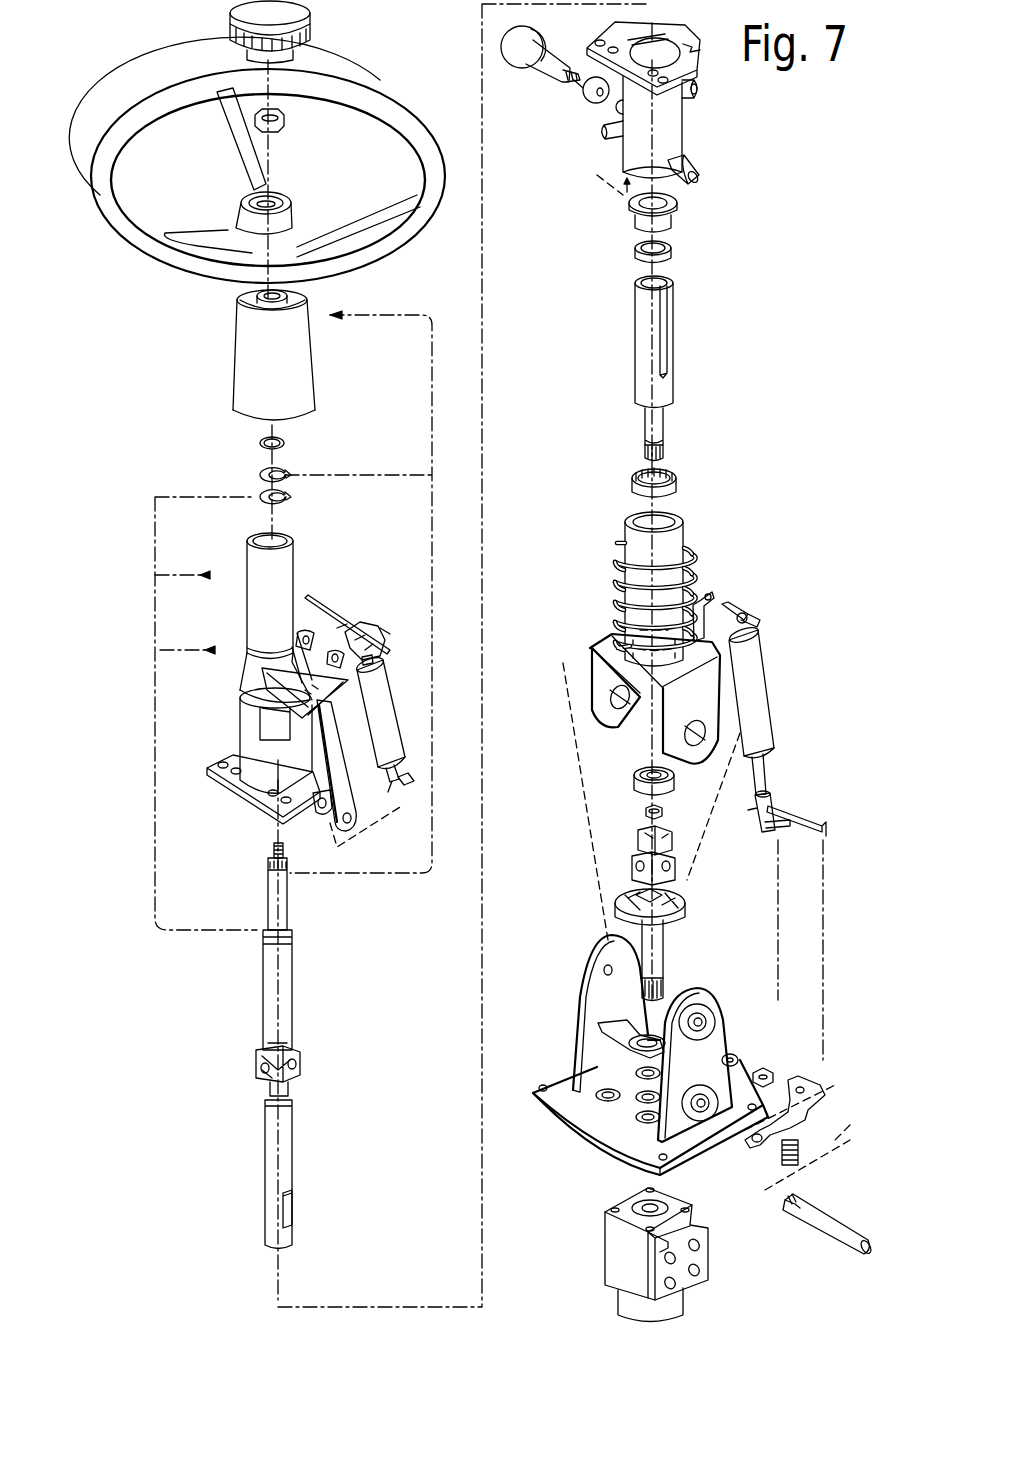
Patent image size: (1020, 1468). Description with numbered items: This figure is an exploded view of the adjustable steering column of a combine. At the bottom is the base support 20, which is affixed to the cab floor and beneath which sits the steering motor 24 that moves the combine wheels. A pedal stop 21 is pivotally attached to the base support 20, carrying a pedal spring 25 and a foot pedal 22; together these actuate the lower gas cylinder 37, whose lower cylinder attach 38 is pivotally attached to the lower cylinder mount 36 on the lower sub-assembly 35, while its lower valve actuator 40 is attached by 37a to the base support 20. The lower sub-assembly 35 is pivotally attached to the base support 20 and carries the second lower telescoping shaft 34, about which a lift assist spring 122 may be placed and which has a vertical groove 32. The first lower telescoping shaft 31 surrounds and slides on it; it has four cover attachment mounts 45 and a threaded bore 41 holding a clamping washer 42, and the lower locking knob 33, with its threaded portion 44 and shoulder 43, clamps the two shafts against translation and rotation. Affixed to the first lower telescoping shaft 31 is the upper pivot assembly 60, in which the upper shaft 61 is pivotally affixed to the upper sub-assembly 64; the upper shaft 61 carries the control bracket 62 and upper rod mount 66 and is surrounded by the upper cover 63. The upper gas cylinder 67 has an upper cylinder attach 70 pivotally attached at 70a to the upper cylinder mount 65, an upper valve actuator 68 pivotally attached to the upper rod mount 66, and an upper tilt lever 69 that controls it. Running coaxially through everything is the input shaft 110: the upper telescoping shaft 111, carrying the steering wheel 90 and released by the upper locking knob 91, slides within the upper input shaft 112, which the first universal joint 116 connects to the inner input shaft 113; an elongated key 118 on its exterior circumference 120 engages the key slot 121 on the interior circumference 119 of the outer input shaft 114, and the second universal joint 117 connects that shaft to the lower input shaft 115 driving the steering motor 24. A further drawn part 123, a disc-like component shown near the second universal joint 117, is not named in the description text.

The base support 20 is at (590, 994).
The pedal stop 21 is at (812, 1085).
The foot pedal 22 is at (826, 1225).
The steering motor 24 is at (625, 1200).
The pedal spring 25 is at (800, 1160).
The first lower telescoping shaft 31 is at (680, 135).
The vertical groove 32 is at (620, 572).
The lower locking knob 33 is at (505, 62).
The second lower telescoping shaft 34 is at (683, 525).
The lower sub-assembly 35 is at (600, 640).
The lower cylinder mount 36 is at (714, 596).
The lower gas cylinder 37 is at (755, 672).
The attachment of lower valve actuator 37a is at (790, 835).
The lower cylinder attach 38 is at (760, 620).
The lower valve actuator 40 is at (775, 800).
The threaded bore 41 is at (612, 112).
The clamping washer 42 is at (580, 100).
The shoulder 43 is at (572, 85).
The threaded portion 44 is at (560, 70).
The cover attachment mounts 45 is at (700, 90).
The upper pivot assembly 60 is at (205, 650).
The upper shaft 61 is at (250, 612).
The control bracket 62 is at (265, 697).
The upper cover 63 is at (240, 360).
The upper sub-assembly 64 is at (243, 750).
The upper cylinder mount 65 is at (355, 818).
The upper rod mount 66 is at (318, 628).
The upper gas cylinder 67 is at (385, 708).
The upper valve actuator 68 is at (378, 630).
The upper tilt lever 69 is at (312, 595).
The upper cylinder attach 70 is at (414, 778).
The pivot attachment of upper cylinder attach 70a is at (410, 785).
The steering wheel 90 is at (213, 70).
The upper locking knob 91 is at (320, 30).
The input shaft 110 is at (225, 1063).
The upper telescoping shaft 111 is at (287, 893).
The upper input shaft 112 is at (292, 985).
The inner input shaft 113 is at (292, 1140).
The outer input shaft 114 is at (668, 335).
The lower input shaft 115 is at (663, 937).
The first universal joint 116 is at (300, 1062).
The second universal joint 117 is at (676, 870).
The elongated key 118 is at (292, 1210).
The interior circumference 119 is at (640, 280).
The exterior circumference 120 is at (281, 1174).
The key slot 121 is at (668, 275).
The lift assist spring 122 is at (693, 550).
The disc 123 is at (618, 895).